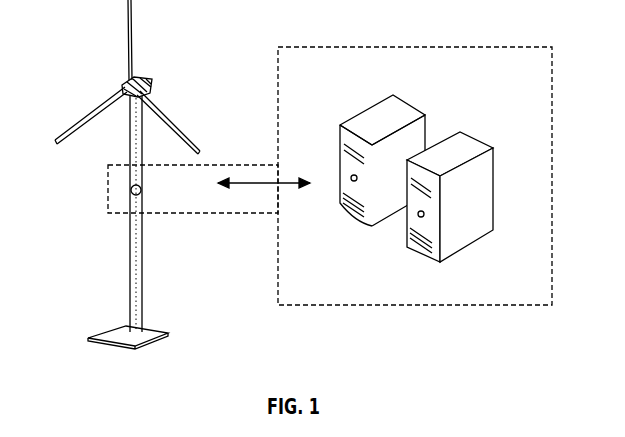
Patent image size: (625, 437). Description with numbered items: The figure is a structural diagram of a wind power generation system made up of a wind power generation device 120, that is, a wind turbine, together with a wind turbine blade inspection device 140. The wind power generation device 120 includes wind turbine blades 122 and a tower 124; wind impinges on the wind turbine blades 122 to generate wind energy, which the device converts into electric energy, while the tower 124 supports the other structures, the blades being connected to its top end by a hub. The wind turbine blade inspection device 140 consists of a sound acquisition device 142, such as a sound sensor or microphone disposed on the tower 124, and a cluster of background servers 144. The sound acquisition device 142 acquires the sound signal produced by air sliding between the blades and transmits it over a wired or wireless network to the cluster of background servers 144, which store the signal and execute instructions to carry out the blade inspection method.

The wind power generation device 120 is at (139, 174).
The wind turbine blades 122 is at (160, 121).
The tower 124 is at (141, 277).
The sound acquisition device 142 is at (141, 188).
The wind turbine blade inspection device 140 is at (415, 176).
The cluster of background servers 144 is at (477, 138).